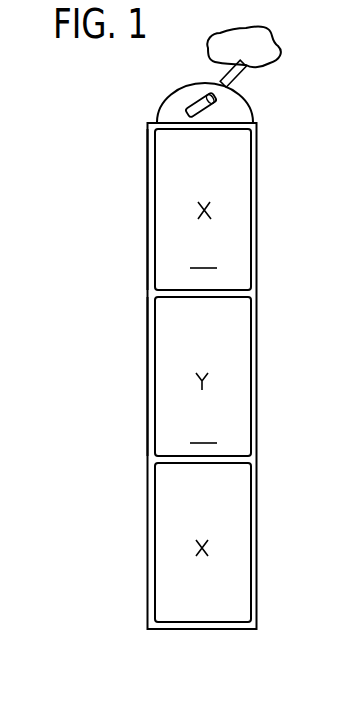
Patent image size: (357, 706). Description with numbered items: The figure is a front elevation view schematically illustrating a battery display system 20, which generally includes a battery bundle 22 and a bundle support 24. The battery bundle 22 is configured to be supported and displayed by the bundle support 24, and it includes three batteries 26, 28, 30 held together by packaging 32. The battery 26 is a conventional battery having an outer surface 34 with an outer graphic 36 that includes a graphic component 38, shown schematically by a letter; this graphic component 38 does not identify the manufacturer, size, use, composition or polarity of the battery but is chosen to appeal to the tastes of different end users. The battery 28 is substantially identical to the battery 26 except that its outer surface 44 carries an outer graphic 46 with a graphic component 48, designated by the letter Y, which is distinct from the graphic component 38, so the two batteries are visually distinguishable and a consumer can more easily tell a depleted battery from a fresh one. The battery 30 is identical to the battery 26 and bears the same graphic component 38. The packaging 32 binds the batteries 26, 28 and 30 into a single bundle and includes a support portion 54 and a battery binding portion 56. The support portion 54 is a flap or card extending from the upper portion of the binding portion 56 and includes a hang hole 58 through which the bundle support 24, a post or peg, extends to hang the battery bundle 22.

The battery display system 20 is at (80, 131).
The battery bundle 22 is at (147, 121).
The bundle support 24 is at (220, 76).
The battery 26 is at (237, 239).
The battery 28 is at (237, 407).
The battery 30 is at (222, 578).
The packaging 32 is at (145, 251).
The outer surface 34 is at (203, 254).
The outer graphic 36 is at (237, 183).
The graphic component 38 is at (203, 198).
The outer surface 44 is at (203, 429).
The outer graphic 46 is at (238, 370).
The graphic component 48 is at (202, 372).
The support portion 54 is at (243, 97).
The battery binding portion 56 is at (149, 417).
The hang hole 58 is at (190, 97).